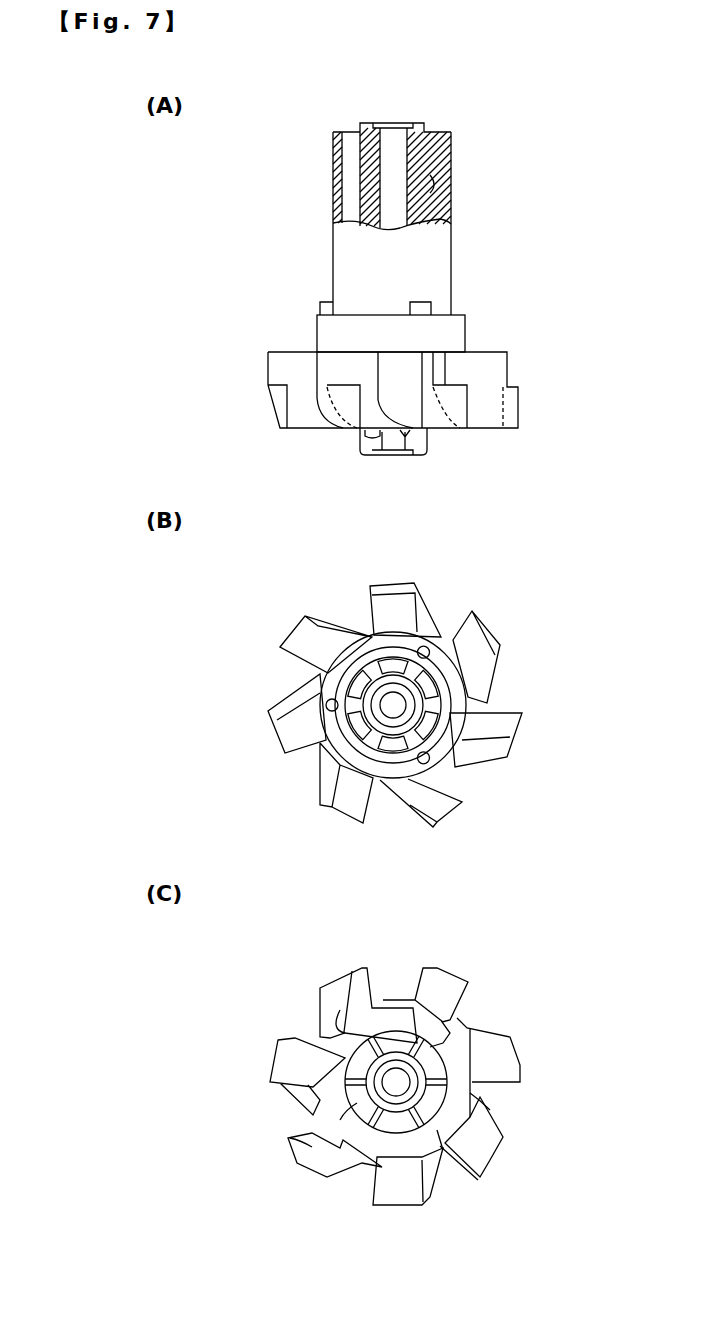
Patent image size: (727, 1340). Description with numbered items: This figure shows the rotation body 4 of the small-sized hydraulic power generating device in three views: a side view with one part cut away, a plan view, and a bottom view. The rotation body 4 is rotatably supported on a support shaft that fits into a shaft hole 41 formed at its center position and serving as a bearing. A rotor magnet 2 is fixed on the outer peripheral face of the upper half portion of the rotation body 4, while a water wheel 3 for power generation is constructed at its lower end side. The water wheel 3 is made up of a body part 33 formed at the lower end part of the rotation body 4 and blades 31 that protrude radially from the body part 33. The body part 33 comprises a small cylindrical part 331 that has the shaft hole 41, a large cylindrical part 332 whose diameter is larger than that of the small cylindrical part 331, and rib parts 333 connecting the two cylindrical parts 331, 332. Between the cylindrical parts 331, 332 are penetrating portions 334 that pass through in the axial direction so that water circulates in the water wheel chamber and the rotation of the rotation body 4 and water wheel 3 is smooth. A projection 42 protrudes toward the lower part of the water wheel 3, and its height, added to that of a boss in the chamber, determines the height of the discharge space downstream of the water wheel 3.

The rotor magnet 2 is at (430, 193).
The water wheel 3 is at (543, 372).
The rotation body 4 is at (488, 133).
The blade 31 is at (280, 368).
The body part 33 is at (443, 705).
The small cylindrical part 331 is at (457, 1060).
The large cylindrical part 332 is at (457, 1073).
The rib part 333 is at (340, 1010).
The penetrating portion 334 is at (430, 687).
The shaft hole 41 is at (363, 1065).
The projection 42 is at (423, 455).